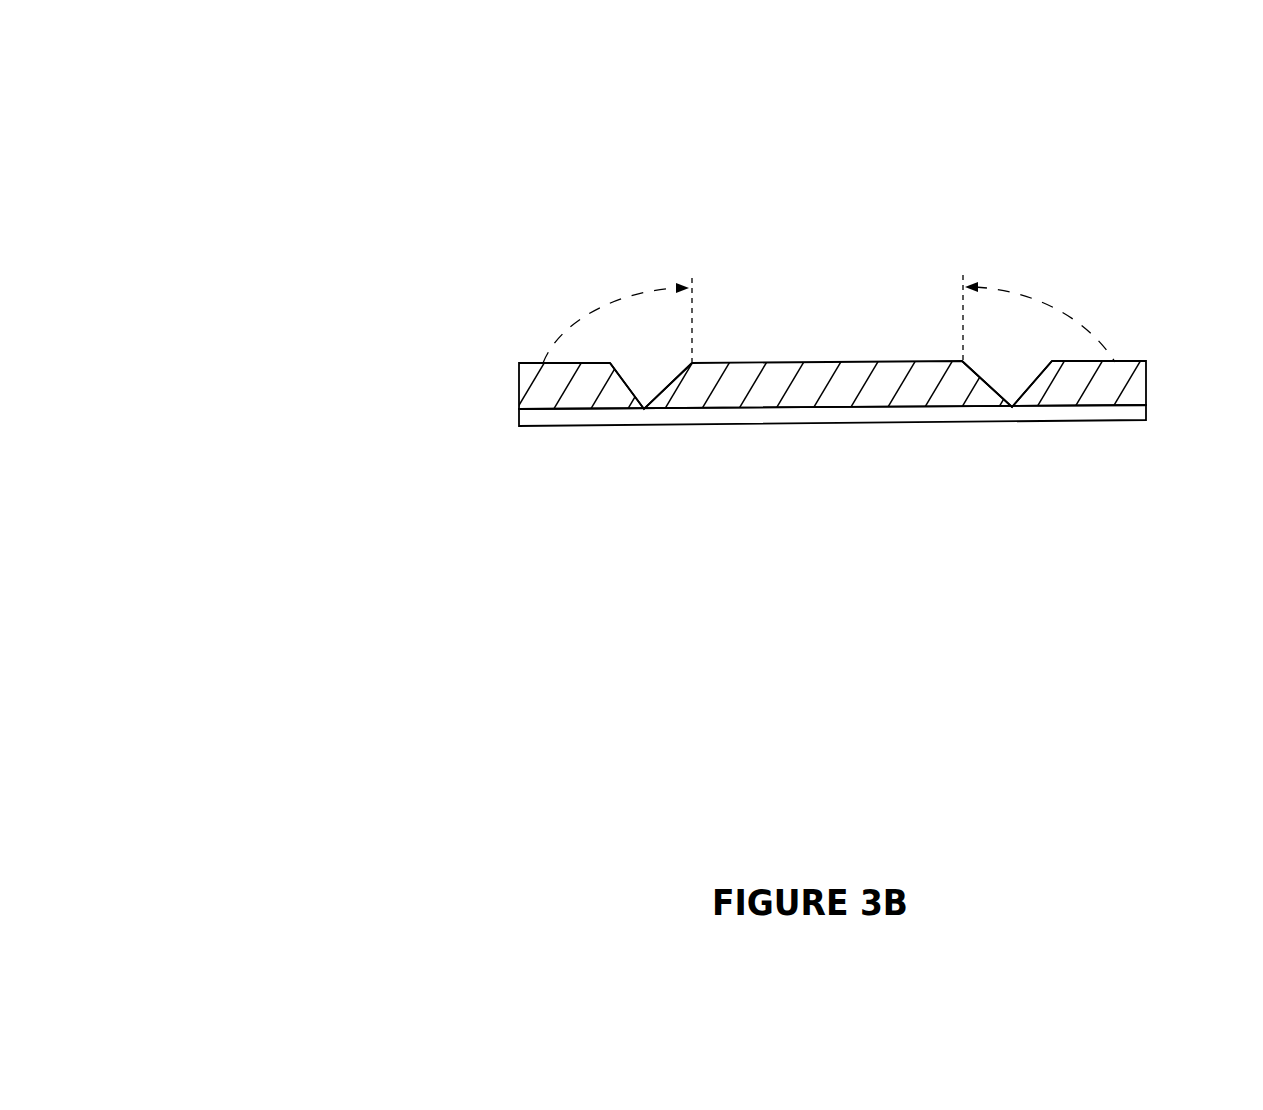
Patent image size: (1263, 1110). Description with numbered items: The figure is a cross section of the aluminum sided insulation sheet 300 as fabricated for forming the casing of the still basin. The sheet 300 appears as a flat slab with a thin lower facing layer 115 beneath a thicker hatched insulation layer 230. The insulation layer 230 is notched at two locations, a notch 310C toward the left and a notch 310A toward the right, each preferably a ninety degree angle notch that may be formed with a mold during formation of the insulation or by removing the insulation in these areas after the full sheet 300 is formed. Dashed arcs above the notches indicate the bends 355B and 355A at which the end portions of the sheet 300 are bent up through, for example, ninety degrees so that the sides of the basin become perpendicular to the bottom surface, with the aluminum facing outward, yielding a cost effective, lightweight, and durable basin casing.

The sheet 300 is at (328, 173).
The patterned layer 230 is at (1135, 385).
The substrate 115 is at (1135, 412).
The notch 310C is at (627, 386).
The notch 310A is at (986, 386).
The bend 355B is at (578, 325).
The bend 355A is at (1075, 320).